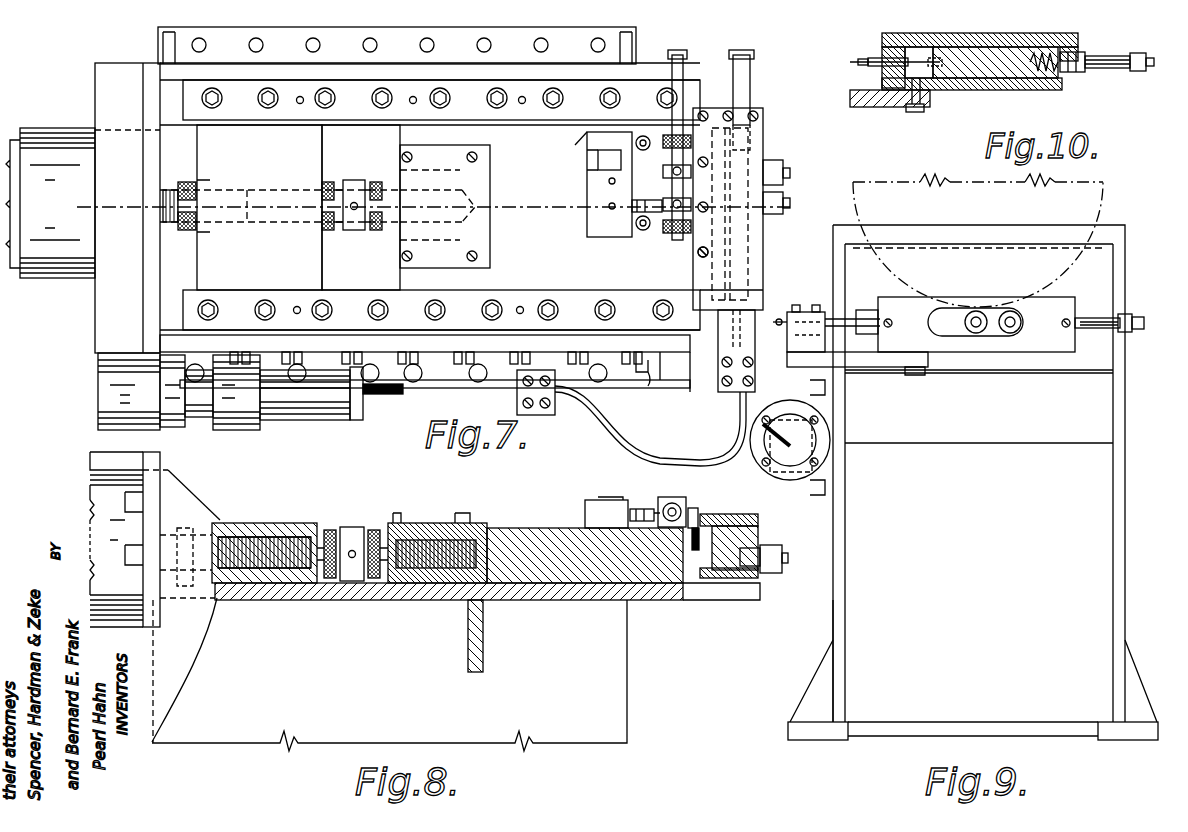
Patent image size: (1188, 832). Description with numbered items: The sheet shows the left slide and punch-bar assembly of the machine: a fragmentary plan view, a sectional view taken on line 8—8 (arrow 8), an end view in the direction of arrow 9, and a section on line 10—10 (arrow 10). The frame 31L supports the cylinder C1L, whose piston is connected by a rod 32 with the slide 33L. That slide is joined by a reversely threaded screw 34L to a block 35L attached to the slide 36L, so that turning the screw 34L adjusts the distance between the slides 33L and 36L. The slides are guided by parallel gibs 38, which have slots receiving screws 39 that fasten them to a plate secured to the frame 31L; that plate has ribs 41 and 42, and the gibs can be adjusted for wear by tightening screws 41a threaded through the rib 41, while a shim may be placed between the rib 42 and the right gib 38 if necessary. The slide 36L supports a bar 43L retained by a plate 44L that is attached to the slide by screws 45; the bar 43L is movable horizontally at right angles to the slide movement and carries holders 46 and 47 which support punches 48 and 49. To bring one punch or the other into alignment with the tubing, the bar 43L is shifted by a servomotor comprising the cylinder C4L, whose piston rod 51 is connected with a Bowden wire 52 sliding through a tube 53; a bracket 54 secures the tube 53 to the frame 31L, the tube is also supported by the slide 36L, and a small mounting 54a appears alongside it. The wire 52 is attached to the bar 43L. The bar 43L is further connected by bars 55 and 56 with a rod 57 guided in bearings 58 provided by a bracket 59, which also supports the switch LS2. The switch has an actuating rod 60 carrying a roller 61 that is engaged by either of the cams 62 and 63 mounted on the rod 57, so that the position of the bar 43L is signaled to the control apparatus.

In FIG. 7, the section line 8— 8 is at (77, 186).
In FIG. 8, the view arrow 9 is at (650, 655).
In FIG. 7, the section line 10— 10 is at (741, 55).
In FIG. 8, the frame 31L is at (645, 598).
In FIG. 9, the frame 31L is at (835, 627).
In FIG. 7, the rod 32 is at (171, 183).
In FIG. 8, the rod 32 is at (195, 497).
In FIG. 7, the slide 33L is at (205, 250).
In FIG. 8, the slide 33L is at (268, 522).
In FIG. 7, the screw 34L is at (355, 230).
In FIG. 8, the screw 34L is at (355, 525).
In FIG. 7, the block 35L is at (490, 257).
In FIG. 8, the block 35L is at (433, 522).
In FIG. 7, the slide 36L is at (395, 266).
In FIG. 8, the slide 36L is at (547, 535).
In FIG. 7, the gib 38 is at (249, 115).
In FIG. 7, the screw 39 is at (548, 108).
In FIG. 7, the rib 41 is at (655, 345).
In FIG. 7, the screw 41a is at (641, 375).
In FIG. 7, the rib 42 is at (278, 73).
In FIG. 7, the bar 43L is at (765, 135).
In FIG. 8, the bar 43L is at (725, 580).
In FIG. 9, the bar 43L is at (945, 320).
In FIG. 10, the bar 43L is at (985, 78).
In FIG. 7, the plate 44L is at (712, 285).
In FIG. 8, the plate 44L is at (745, 513).
In FIG. 10, the plate 44L is at (1000, 42).
In FIG. 7, the screw 45 is at (698, 252).
In FIG. 8, the screw 45 is at (705, 512).
In FIG. 7, the holder 46 is at (772, 214).
In FIG. 8, the holder 46 is at (770, 574).
In FIG. 9, the holder 46 is at (976, 334).
In FIG. 7, the holder 47 is at (773, 162).
In FIG. 9, the holder 47 is at (1012, 334).
In FIG. 7, the punch 48 is at (787, 208).
In FIG. 8, the punch 48 is at (788, 556).
In FIG. 9, the punch 48 is at (976, 310).
In FIG. 7, the punch 49 is at (789, 172).
In FIG. 9, the punch 49 is at (1014, 310).
In FIG. 7, the piston rod 51 is at (401, 396).
In FIG. 7, the Bowden wire 52 is at (450, 395).
In FIG. 9, the Bowden wire 52 is at (868, 340).
In FIG. 10, the Bowden wire 52 is at (862, 58).
In FIG. 7, the tube 53 is at (633, 432).
In FIG. 9, the tube 53 is at (780, 326).
In FIG. 10, the tube 53 is at (866, 68).
In FIG. 7, the bracket 54 is at (545, 417).
In FIG. 7, the terminal bracket 54a is at (757, 388).
In FIG. 9, the terminal bracket 54a is at (808, 310).
In FIG. 7, the bar 55 is at (752, 98).
In FIG. 9, the bar 55 is at (1110, 330).
In FIG. 10, the bar 55 is at (1100, 72).
In FIG. 7, the bar 56 is at (712, 67).
In FIG. 9, the bar 56 is at (1122, 316).
In FIG. 10, the bar 56 is at (1135, 72).
In FIG. 7, the rod 57 is at (668, 113).
In FIG. 7, the bearing 58 is at (665, 236).
In FIG. 7, the bracket 59 is at (592, 142).
In FIG. 7, the actuating rod 60 is at (660, 200).
In FIG. 8, the actuating rod 60 is at (642, 508).
In FIG. 7, the roller 61 is at (660, 180).
In FIG. 8, the roller 61 is at (664, 498).
In FIG. 7, the cam 62 is at (692, 207).
In FIG. 7, the cam 63 is at (692, 172).
In FIG. 7, the cylinder C1L is at (50, 276).
In FIG. 8, the cylinder C1L is at (90, 508).
In FIG. 7, the cylinder C4L is at (310, 415).
In FIG. 9, the cylinder C4L is at (822, 450).
In FIG. 7, the switch LS2 is at (590, 186).
In FIG. 8, the switch LS2 is at (602, 500).